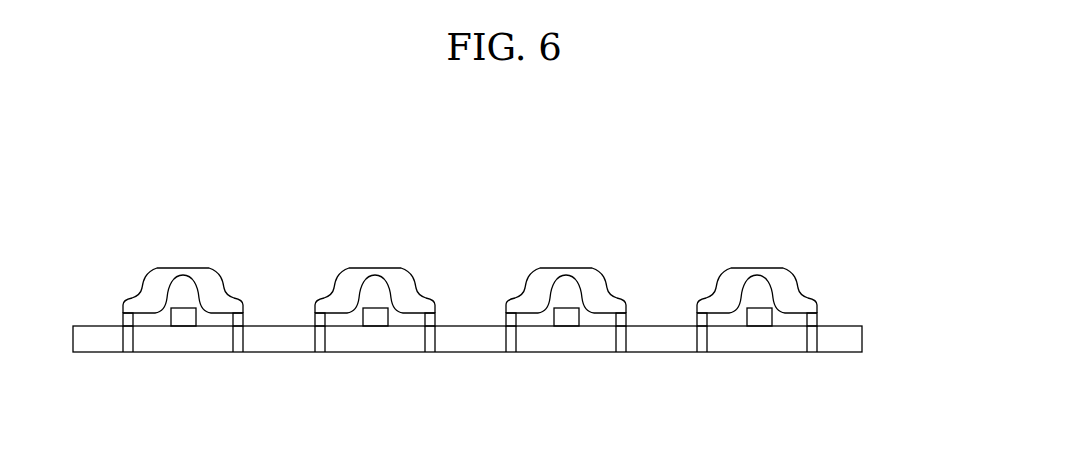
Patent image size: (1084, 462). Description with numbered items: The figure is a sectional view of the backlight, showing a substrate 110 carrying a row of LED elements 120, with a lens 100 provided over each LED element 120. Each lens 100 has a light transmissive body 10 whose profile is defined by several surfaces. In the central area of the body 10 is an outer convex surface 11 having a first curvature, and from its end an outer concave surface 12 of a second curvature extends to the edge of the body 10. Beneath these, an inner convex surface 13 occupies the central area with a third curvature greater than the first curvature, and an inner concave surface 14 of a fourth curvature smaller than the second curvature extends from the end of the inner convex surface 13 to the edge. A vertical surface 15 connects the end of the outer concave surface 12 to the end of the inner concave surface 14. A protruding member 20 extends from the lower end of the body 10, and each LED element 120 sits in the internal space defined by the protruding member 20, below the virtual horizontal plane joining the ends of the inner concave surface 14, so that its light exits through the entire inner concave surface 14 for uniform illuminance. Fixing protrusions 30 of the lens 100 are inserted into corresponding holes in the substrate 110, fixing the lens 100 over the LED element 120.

The lens 100 is at (618, 148).
The light transmissive body 10 is at (547, 187).
The outer convex surface 11 is at (547, 267).
The outer concave surface 12 is at (612, 295).
The inner convex surface 13 is at (572, 274).
The inner concave surface 14 is at (614, 298).
The vertical surface 15 is at (620, 308).
The protruding member 20 is at (697, 313).
The fixing protrusions 30 is at (705, 348).
The substrate 110 is at (855, 338).
The LED elements 120 is at (760, 322).